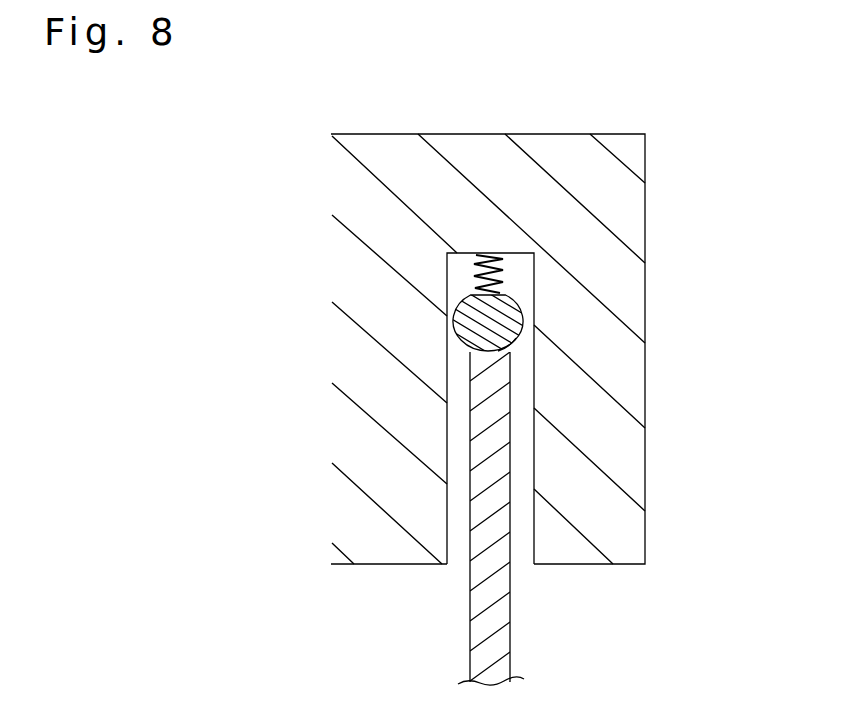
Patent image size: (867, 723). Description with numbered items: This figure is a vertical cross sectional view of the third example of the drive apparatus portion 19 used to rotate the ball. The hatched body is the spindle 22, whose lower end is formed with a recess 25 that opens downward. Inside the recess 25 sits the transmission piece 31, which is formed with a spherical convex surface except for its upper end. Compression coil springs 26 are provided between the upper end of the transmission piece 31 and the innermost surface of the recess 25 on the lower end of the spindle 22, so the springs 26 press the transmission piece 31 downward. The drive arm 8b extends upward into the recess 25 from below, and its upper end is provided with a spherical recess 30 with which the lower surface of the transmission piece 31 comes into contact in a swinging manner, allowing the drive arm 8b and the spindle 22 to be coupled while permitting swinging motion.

The drive apparatus portion 19 is at (538, 153).
The spindle 22 is at (348, 205).
The recess 25 is at (534, 272).
The compression coil springs 26 is at (473, 278).
The transmission piece 31 is at (513, 313).
The spherical recess 30 is at (515, 343).
The drive arm 8b is at (505, 599).